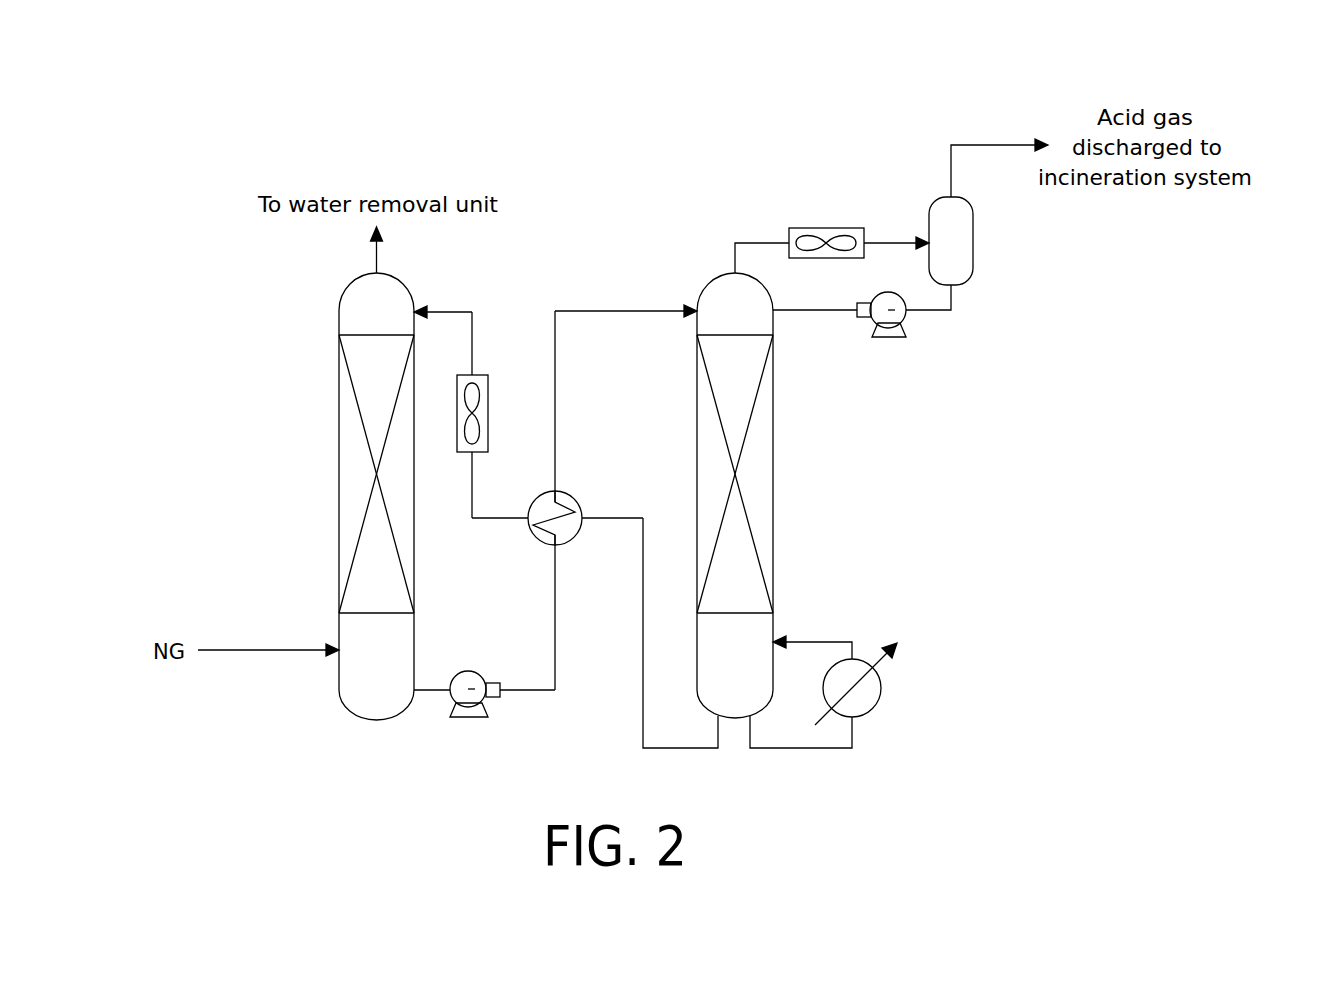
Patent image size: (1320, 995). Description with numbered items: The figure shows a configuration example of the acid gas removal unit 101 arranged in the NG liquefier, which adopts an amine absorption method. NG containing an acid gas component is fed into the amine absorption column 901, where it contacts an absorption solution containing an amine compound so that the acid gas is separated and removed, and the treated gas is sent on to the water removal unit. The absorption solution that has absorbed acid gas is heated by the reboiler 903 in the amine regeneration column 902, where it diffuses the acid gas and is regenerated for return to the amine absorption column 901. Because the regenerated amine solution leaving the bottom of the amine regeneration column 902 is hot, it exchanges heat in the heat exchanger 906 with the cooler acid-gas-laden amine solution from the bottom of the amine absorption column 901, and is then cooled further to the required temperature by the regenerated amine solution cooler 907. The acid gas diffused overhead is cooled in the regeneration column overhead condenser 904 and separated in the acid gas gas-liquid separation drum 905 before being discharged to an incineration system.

The acid gas removal unit 101 is at (337, 86).
The amine absorption column 901 is at (418, 269).
The amine regeneration column 902 is at (709, 284).
The reboiler 903 is at (882, 688).
The regeneration column overhead condenser 904 is at (828, 228).
The acid gas gas-liquid separation drum 905 is at (974, 243).
The heat exchanger 906 is at (580, 503).
The regenerated amine solution cooler 907 is at (480, 373).